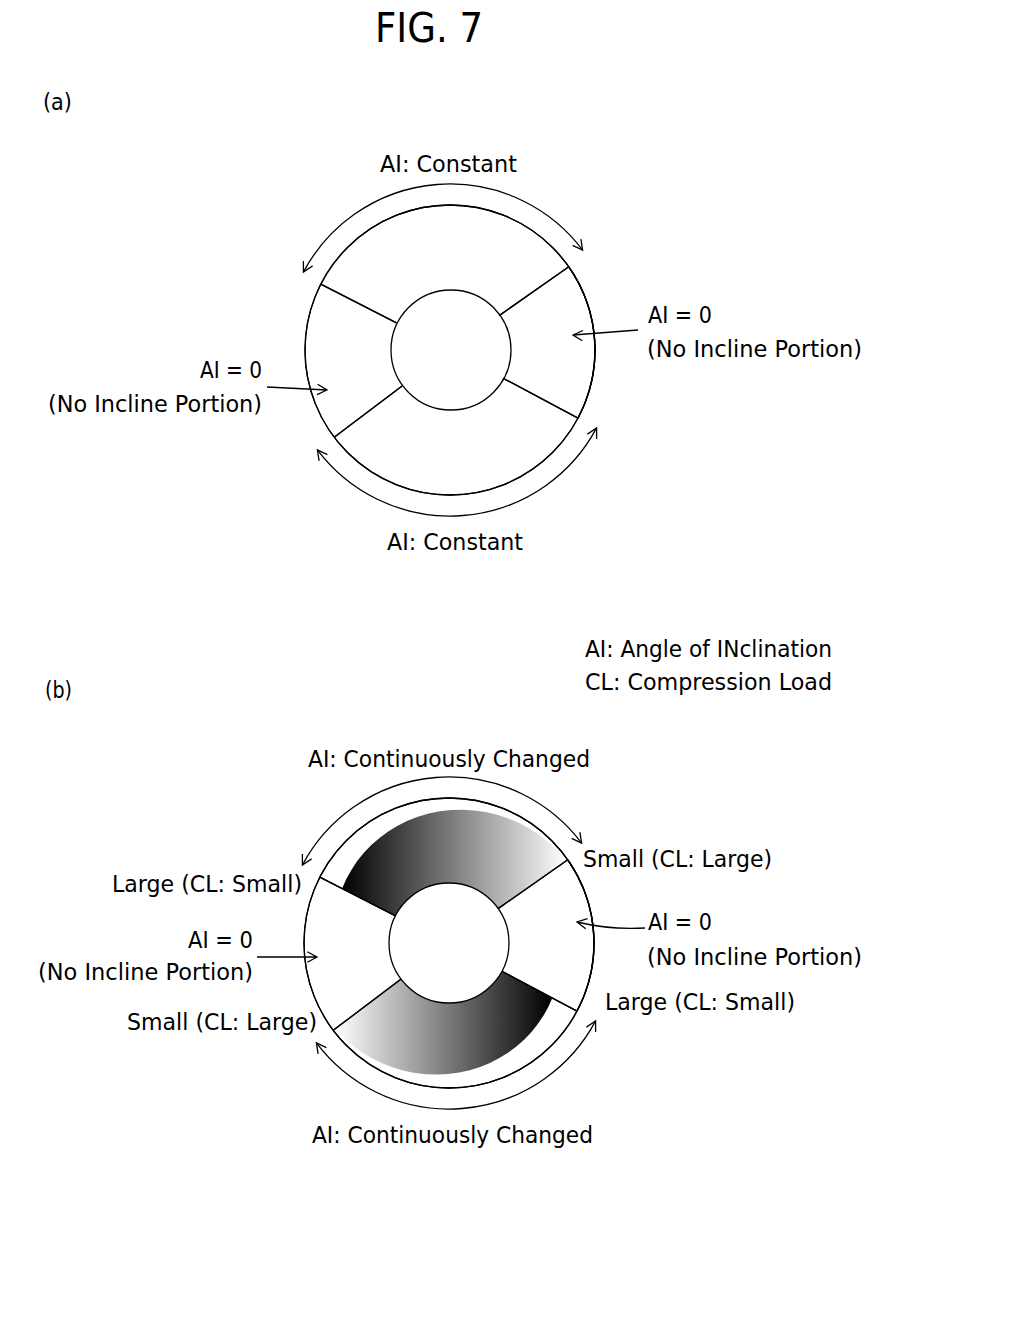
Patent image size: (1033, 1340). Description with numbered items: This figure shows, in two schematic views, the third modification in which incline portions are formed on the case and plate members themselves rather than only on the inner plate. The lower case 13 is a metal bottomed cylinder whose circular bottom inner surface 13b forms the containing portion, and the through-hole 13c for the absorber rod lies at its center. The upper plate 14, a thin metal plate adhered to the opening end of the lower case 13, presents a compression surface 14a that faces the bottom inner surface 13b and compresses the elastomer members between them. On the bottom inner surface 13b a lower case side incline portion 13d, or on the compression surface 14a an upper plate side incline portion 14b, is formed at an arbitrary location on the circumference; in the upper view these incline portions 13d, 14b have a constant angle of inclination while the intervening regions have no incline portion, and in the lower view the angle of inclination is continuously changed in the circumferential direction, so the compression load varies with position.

The lower case 13 is at (266, 247).
The upper plate 14 is at (266, 247).
The bottom inner surface 13b is at (583, 283).
The compression surface 14a is at (583, 283).
The through-hole 13c is at (392, 348).
The lower case side incline portion 13d is at (514, 972).
The upper plate side incline portion 14b is at (514, 972).